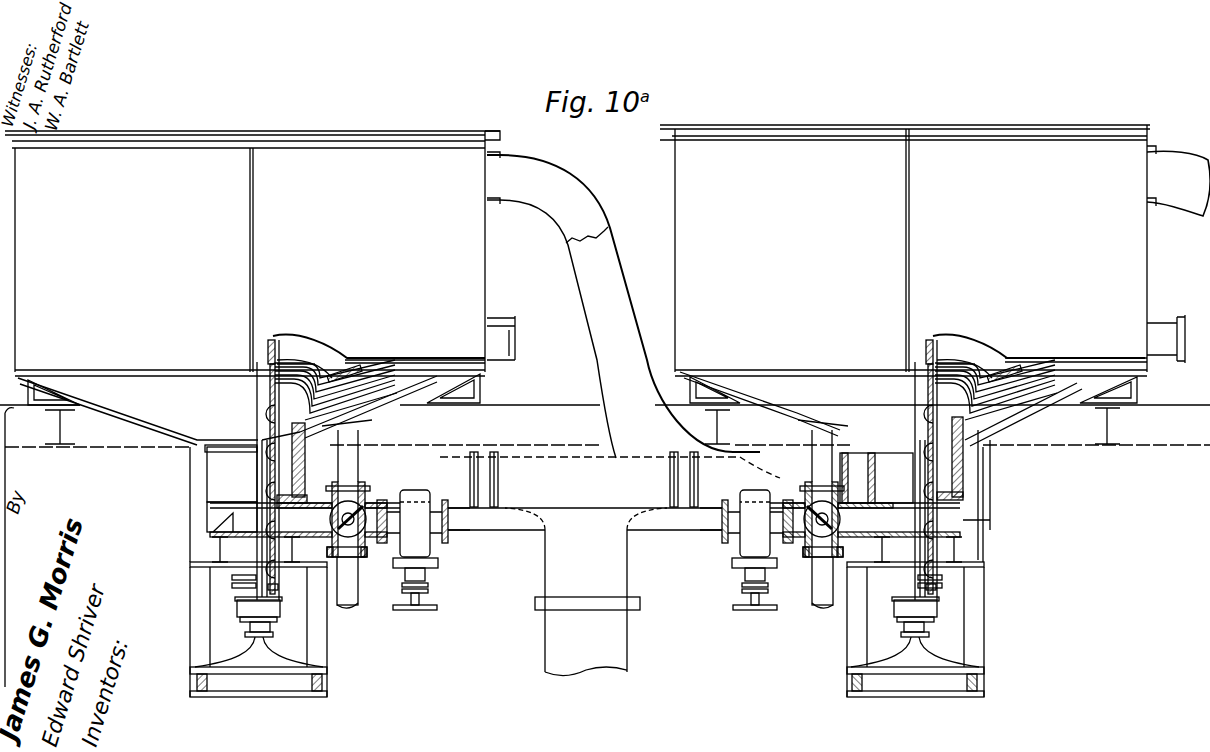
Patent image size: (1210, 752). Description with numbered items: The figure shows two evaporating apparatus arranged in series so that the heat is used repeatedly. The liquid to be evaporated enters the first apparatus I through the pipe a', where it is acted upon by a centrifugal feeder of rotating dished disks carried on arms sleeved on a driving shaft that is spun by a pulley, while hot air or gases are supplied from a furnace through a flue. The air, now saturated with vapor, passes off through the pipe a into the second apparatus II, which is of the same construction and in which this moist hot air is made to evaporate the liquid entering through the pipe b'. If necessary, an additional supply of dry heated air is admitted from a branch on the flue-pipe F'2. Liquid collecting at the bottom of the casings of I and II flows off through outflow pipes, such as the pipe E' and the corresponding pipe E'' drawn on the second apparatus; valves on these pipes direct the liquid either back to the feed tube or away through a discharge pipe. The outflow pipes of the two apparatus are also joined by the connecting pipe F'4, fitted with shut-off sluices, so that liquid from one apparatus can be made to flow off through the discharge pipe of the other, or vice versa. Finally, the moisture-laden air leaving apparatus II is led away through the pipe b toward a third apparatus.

The first evaporating apparatus I is at (252, 253).
The second evaporating apparatus II is at (905, 250).
The vapor pipe a is at (623, 305).
The liquid inlet pipe a' is at (512, 338).
The moist-air outlet pipe b is at (1178, 181).
The liquid inlet pipe b' is at (1172, 339).
The liquid outflow pipe E' is at (361, 455).
The upward branch pipe E'' is at (812, 455).
The flue-pipe F'2 is at (586, 592).
The connecting pipe F'4 is at (585, 531).